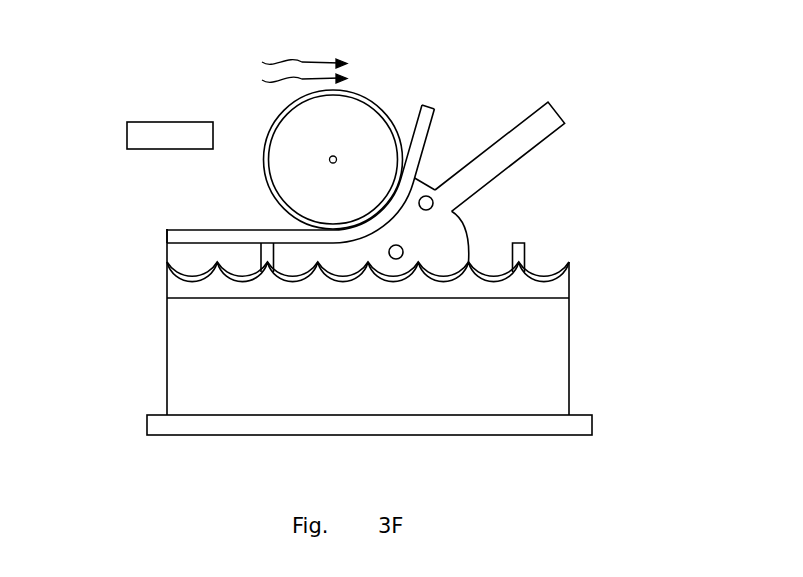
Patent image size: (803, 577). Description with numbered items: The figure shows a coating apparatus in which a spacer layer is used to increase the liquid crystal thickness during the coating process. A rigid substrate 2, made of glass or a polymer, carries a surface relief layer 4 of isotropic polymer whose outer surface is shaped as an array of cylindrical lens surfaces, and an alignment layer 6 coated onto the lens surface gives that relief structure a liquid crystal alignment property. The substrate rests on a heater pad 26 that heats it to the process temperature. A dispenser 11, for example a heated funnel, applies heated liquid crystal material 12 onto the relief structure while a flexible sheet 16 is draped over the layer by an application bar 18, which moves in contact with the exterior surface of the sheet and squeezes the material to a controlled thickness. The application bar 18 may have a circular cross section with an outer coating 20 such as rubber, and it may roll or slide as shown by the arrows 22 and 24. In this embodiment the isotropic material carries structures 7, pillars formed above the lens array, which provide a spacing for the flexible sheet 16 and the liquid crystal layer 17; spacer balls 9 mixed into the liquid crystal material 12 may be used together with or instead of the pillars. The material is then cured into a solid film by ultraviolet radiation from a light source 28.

The rigid substrate 2 is at (570, 345).
The surface relief layer 4 is at (567, 285).
The alignment layer 6 is at (572, 266).
The structure 7 is at (524, 249).
The spacer balls 9 is at (427, 196).
The dispenser 11 is at (567, 120).
The liquid crystal material 12 is at (463, 233).
The flexible sheet 16 is at (425, 101).
The liquid crystal layer 17 is at (177, 254).
The application bar 18 is at (283, 182).
The outer coating 20 is at (277, 110).
The arrow 22 is at (289, 78).
The arrow 24 is at (289, 60).
The heater pad 26 is at (583, 422).
The light source 28 is at (129, 145).